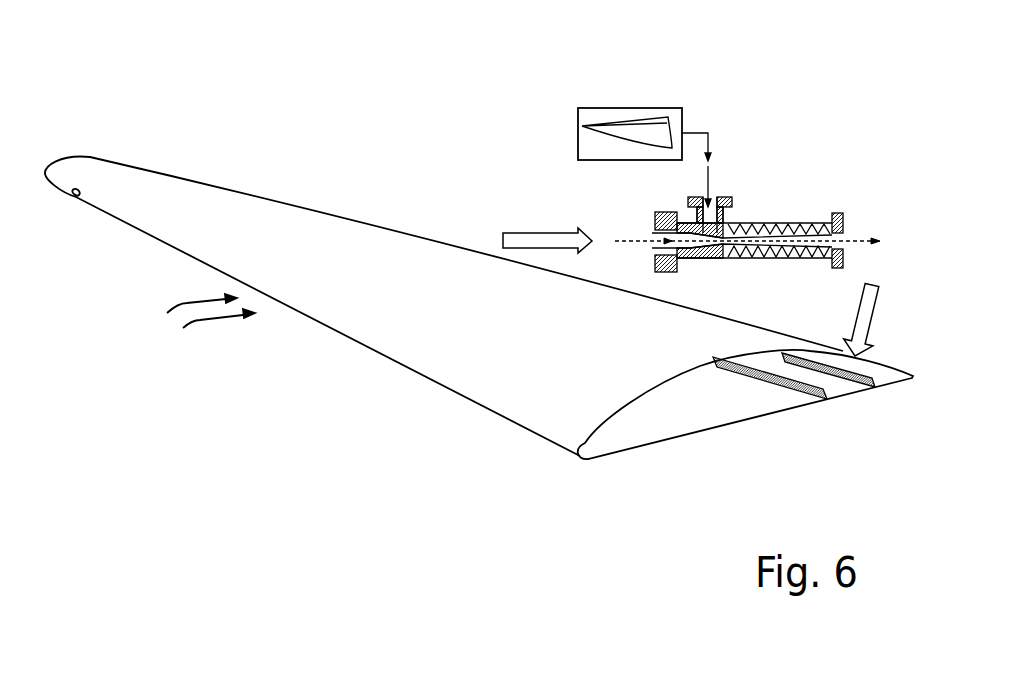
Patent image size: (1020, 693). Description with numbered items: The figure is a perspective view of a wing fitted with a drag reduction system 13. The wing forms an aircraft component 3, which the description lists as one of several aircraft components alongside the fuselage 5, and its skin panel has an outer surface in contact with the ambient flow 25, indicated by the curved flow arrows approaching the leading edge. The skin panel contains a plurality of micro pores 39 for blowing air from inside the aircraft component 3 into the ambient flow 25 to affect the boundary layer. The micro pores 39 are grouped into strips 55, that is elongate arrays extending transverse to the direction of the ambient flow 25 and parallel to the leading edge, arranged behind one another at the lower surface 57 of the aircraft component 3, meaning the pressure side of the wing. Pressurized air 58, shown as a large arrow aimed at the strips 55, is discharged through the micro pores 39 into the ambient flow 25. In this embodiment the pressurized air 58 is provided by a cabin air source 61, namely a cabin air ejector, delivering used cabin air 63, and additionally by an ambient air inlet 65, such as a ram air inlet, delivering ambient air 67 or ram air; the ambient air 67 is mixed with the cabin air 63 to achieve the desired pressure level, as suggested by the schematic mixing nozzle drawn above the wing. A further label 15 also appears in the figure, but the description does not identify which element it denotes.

The aircraft component 3 is at (703, 413).
The fuselage 5 is at (298, 223).
The drag reduction system 13 is at (831, 381).
The actuator 15 is at (802, 413).
The ambient flow 25 is at (187, 303).
The micro pores 39 is at (802, 413).
The strips 55 is at (873, 388).
The lower surface 57 is at (777, 415).
The pressurized air 58 is at (880, 293).
The cabin air source 61 is at (545, 233).
The used cabin air 63 is at (633, 242).
The ambient air inlet 65 is at (650, 133).
The ambient air 67 is at (710, 181).